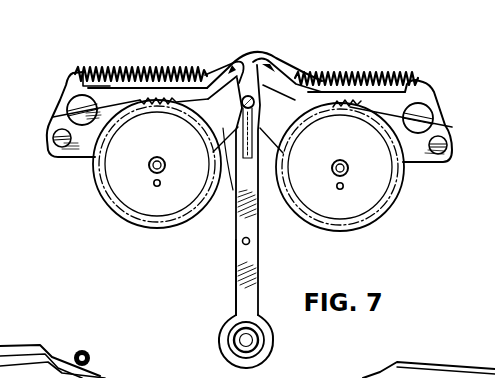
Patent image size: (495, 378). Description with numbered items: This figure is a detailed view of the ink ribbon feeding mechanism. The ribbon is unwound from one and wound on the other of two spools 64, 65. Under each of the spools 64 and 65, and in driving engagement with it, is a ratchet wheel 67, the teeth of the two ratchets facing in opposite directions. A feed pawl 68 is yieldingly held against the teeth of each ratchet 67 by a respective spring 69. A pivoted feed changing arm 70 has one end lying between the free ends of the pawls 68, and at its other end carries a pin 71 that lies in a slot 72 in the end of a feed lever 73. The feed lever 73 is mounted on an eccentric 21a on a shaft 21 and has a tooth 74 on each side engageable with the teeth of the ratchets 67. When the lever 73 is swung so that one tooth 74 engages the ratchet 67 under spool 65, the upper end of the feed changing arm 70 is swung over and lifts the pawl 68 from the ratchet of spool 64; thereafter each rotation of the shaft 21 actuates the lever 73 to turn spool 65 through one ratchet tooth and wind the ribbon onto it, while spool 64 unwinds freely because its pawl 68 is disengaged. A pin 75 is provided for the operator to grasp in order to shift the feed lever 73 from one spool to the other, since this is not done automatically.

The shaft 21 is at (240, 336).
The eccentric 21a is at (262, 347).
The spool 64 is at (123, 190).
The spool 65 is at (380, 192).
The ratchet wheel 67 is at (145, 228).
The feed pawl 68 is at (178, 97).
The spring 69 is at (137, 68).
The feed changing arm 70 is at (237, 88).
The pin 71 is at (228, 204).
The slot 72 is at (266, 140).
The feed lever 73 is at (240, 284).
The tooth 74 is at (222, 149).
The pin 75 is at (241, 243).